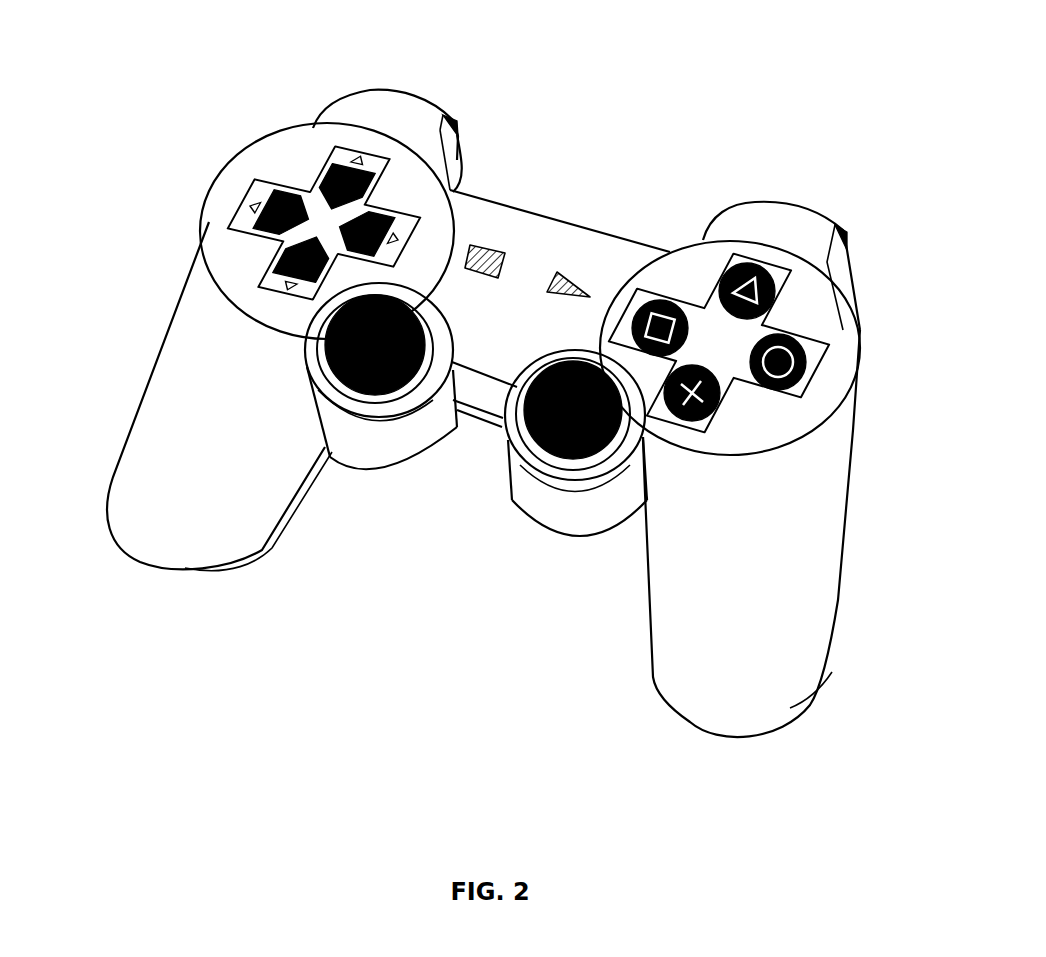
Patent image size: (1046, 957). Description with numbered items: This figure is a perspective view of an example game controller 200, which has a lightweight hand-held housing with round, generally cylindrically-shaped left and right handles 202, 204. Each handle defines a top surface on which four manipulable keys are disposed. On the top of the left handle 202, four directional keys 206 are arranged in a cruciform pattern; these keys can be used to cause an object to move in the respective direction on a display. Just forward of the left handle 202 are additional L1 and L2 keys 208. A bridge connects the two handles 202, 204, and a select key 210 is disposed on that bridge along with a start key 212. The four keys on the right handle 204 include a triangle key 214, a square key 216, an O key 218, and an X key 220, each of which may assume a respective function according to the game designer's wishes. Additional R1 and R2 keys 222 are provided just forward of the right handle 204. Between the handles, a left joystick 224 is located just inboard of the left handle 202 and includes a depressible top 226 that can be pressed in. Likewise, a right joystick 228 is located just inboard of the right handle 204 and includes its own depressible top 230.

The controller 200 is at (296, 698).
The left handle 202 is at (155, 520).
The right handle 204 is at (785, 702).
The directional keys 206 is at (245, 228).
The L1 and L2 keys 208 is at (387, 90).
The select key 210 is at (487, 253).
The start key 212 is at (562, 284).
The triangle key 214 is at (777, 279).
The square key 216 is at (665, 318).
The O key 218 is at (783, 373).
The X key 220 is at (684, 413).
The R1 and R2 keys 222 is at (755, 210).
The left joystick 224 is at (393, 398).
The depressible top 226 is at (350, 390).
The right joystick 228 is at (547, 457).
The depressible top 230 is at (587, 457).